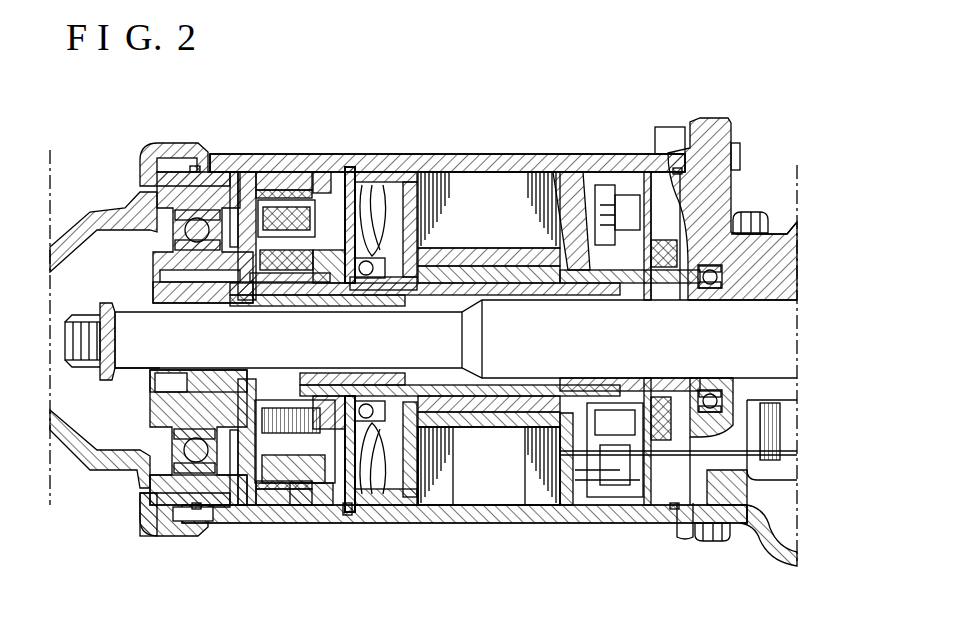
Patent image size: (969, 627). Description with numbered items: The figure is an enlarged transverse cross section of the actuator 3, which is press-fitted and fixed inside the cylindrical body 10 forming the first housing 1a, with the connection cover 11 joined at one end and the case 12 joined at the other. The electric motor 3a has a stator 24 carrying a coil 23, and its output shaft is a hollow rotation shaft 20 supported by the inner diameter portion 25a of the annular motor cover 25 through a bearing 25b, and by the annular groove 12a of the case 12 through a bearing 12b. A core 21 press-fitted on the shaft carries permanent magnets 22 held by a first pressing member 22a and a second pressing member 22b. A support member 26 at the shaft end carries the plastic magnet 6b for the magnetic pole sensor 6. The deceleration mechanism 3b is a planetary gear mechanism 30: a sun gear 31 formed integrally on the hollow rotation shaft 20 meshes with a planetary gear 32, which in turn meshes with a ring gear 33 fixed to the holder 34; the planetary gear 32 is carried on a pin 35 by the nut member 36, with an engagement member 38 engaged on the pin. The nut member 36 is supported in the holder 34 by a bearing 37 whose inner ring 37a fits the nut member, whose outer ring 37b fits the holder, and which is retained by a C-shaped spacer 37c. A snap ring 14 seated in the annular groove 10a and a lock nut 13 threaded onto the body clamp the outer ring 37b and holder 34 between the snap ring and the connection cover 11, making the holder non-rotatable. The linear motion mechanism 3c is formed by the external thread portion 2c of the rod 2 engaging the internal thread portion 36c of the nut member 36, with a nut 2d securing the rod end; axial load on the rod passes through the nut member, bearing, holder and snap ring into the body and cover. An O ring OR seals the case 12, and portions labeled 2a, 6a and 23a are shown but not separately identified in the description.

The first housing 1a is at (490, 152).
The rod 2 is at (532, 355).
The flange bolt 2a is at (782, 257).
The external thread portion 2c is at (125, 373).
The nut 2d is at (88, 372).
The actuator 3 is at (620, 157).
The electric motor 3a is at (462, 492).
The deceleration mechanism 3b is at (248, 503).
The linear motion mechanism 3c is at (140, 383).
The magnetic pole sensor 6 is at (651, 190).
The bracket portion 6a is at (665, 223).
The plastic magnet 6b is at (660, 440).
The cylindrical body 10 is at (492, 163).
The annular groove 10a is at (347, 512).
The connection cover 11 is at (174, 218).
The case 12 is at (717, 220).
The annular groove 12a is at (705, 505).
The bearing 12b is at (745, 502).
The lock nut 13 is at (170, 147).
The snap ring 14 is at (349, 210).
The hollow rotation shaft 20 is at (448, 268).
The core 21 is at (497, 262).
The permanent magnets 22 is at (487, 430).
The first pressing member 22a is at (428, 440).
The second pressing member 22b is at (560, 440).
The coil 23 is at (580, 203).
The terminal portion 23a is at (616, 485).
The stator 24 is at (541, 183).
The motor cover 25 is at (392, 176).
The inner diameter portion 25a is at (380, 503).
The bearing 25b is at (318, 490).
The support member 26 is at (680, 440).
The planetary gear mechanism 30 is at (290, 437).
The sun gear 31 is at (374, 188).
The planetary gear 32 is at (298, 205).
The ring gear 33 is at (280, 178).
The holder 34 is at (248, 185).
The pin 35 is at (233, 178).
The nut member 36 is at (120, 225).
The internal thread portion 36c is at (170, 298).
The bearing 37 is at (167, 203).
The inner ring 37a is at (177, 518).
The outer ring 37b is at (205, 510).
The spacer 37c is at (152, 505).
The engagement member 38 is at (332, 198).
The O ring OR is at (194, 167).